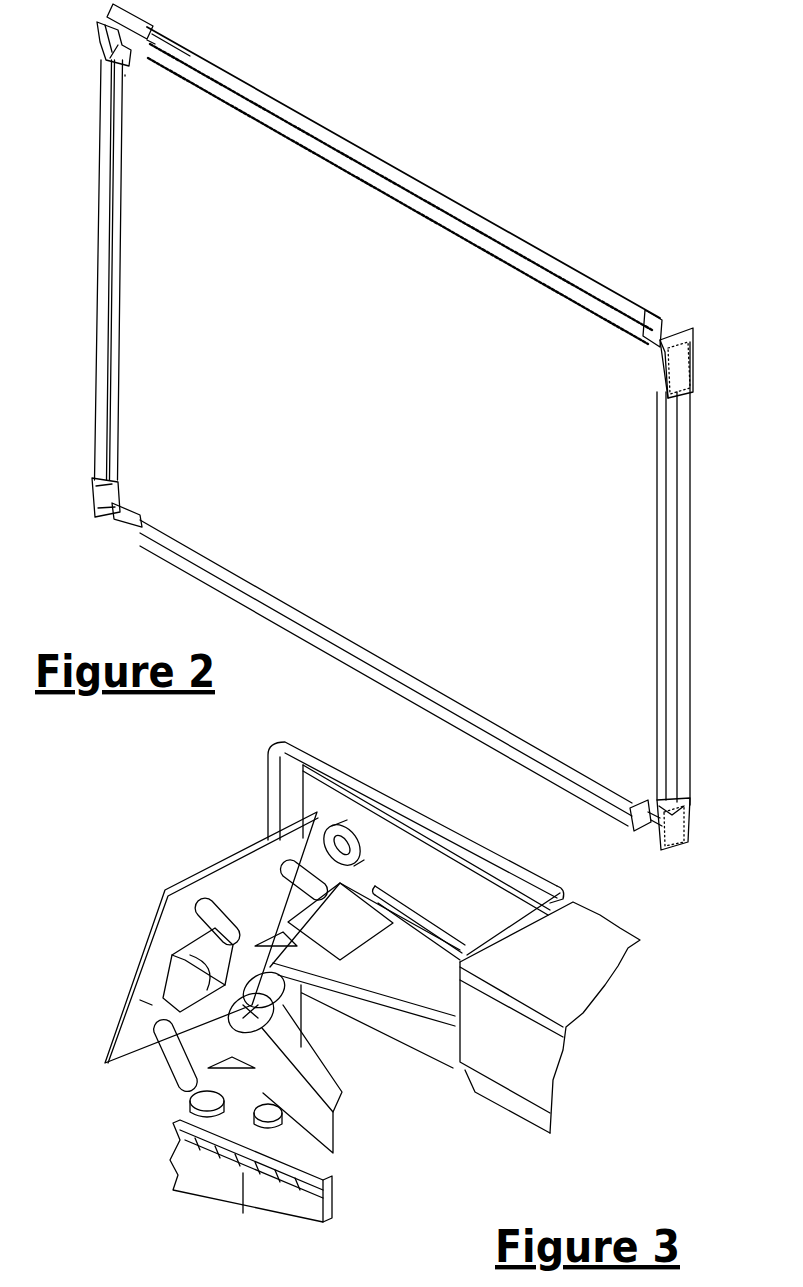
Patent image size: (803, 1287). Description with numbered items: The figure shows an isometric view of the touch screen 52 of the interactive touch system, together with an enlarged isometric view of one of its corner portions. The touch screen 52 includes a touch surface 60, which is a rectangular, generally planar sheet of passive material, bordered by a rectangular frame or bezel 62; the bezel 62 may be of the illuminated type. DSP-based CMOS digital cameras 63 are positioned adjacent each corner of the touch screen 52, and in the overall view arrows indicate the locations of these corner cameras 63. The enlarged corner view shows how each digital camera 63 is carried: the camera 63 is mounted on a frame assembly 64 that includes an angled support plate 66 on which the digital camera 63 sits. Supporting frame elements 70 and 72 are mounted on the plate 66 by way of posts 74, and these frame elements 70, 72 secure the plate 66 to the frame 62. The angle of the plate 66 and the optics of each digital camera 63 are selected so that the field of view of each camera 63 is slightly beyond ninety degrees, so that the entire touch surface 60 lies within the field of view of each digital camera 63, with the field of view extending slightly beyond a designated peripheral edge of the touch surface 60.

In FIG. 2, the touch screen 52 is at (617, 235).
In FIG. 2, the touch surface 60 is at (236, 247).
In FIG. 2, the frame or bezel 62 is at (481, 216).
In FIG. 3, the frame or bezel 62 is at (502, 1095).
In FIG. 2, the digital camera 63 is at (128, 72).
In FIG. 3, the digital camera 63 is at (290, 1037).
In FIG. 3, the frame assembly 64 is at (110, 886).
In FIG. 2, the angled support plate 66 is at (690, 378).
In FIG. 3, the angled support plate 66 is at (145, 1006).
In FIG. 3, the supporting frame element 70 is at (417, 1033).
In FIG. 3, the supporting frame element 72 is at (338, 1137).
In FIG. 3, the post 74 is at (287, 867).